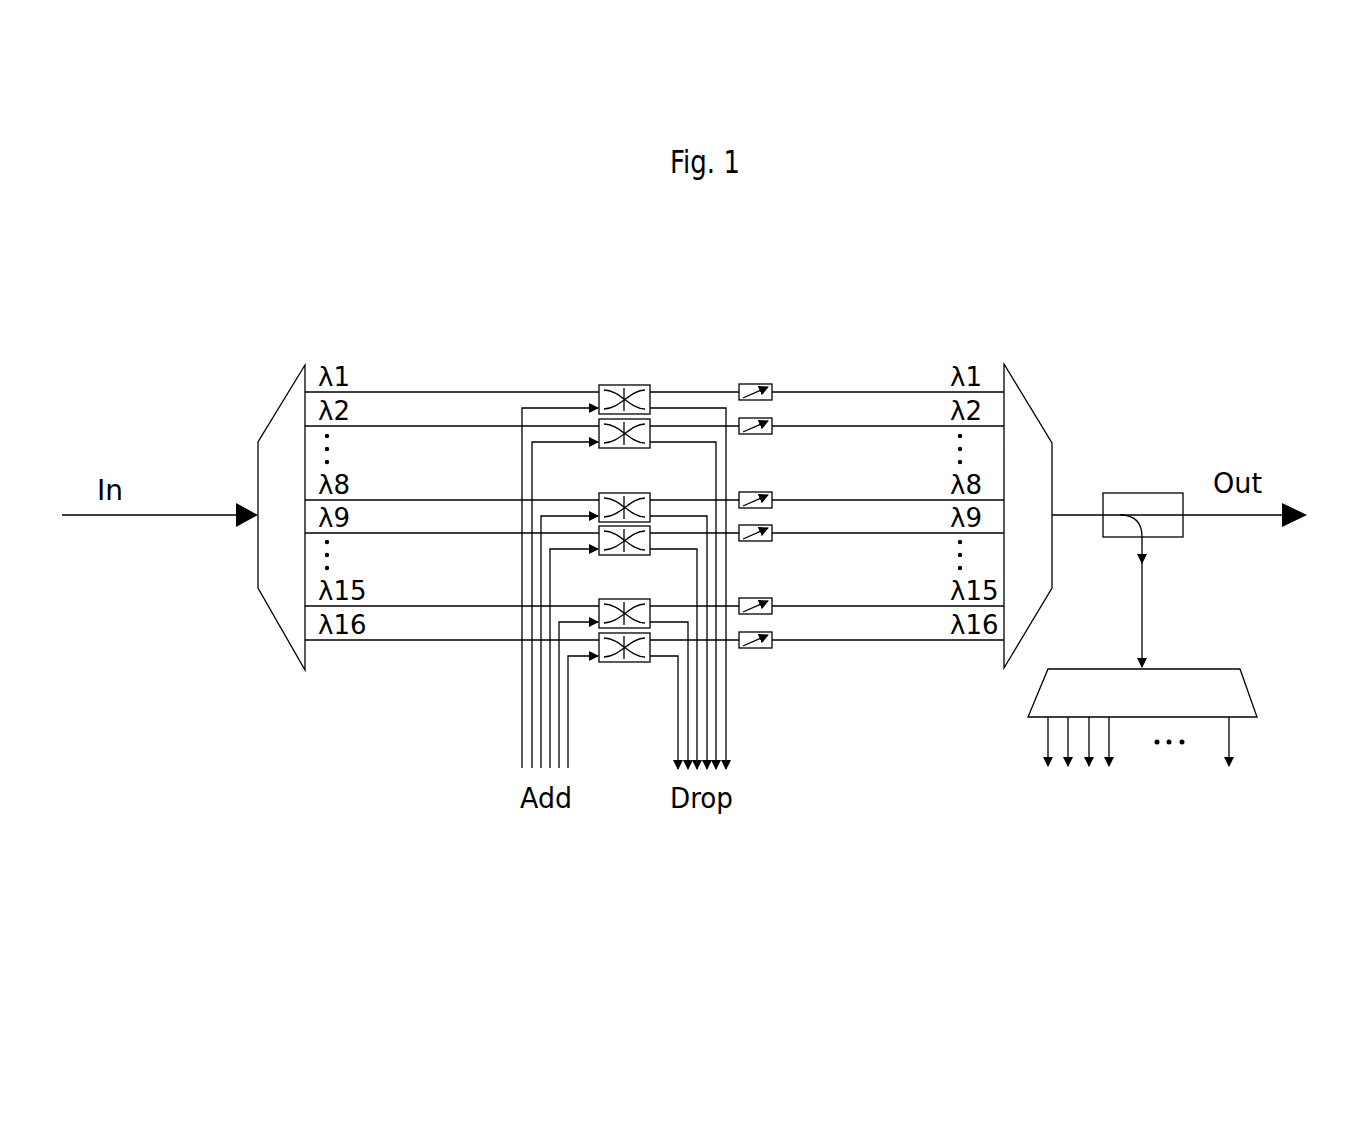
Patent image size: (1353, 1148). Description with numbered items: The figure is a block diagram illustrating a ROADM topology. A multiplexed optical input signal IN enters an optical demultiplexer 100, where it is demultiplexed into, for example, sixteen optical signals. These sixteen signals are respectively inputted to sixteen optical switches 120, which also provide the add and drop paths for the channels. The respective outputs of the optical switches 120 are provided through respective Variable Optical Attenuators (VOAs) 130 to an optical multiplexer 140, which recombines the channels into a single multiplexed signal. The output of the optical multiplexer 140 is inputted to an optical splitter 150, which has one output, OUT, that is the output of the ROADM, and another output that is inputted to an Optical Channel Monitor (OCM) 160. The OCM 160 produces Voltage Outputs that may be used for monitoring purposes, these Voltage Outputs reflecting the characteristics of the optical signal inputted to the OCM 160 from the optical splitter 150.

The optical demultiplexer 100 is at (284, 412).
The optical switches 120 is at (597, 384).
The Variable Optical Attenuators (VOAs) 130 is at (775, 383).
The optical multiplexer 140 is at (1034, 411).
The optical splitter 150 is at (1190, 542).
The Optical Channel Monitor (OCM) 160 is at (1248, 663).